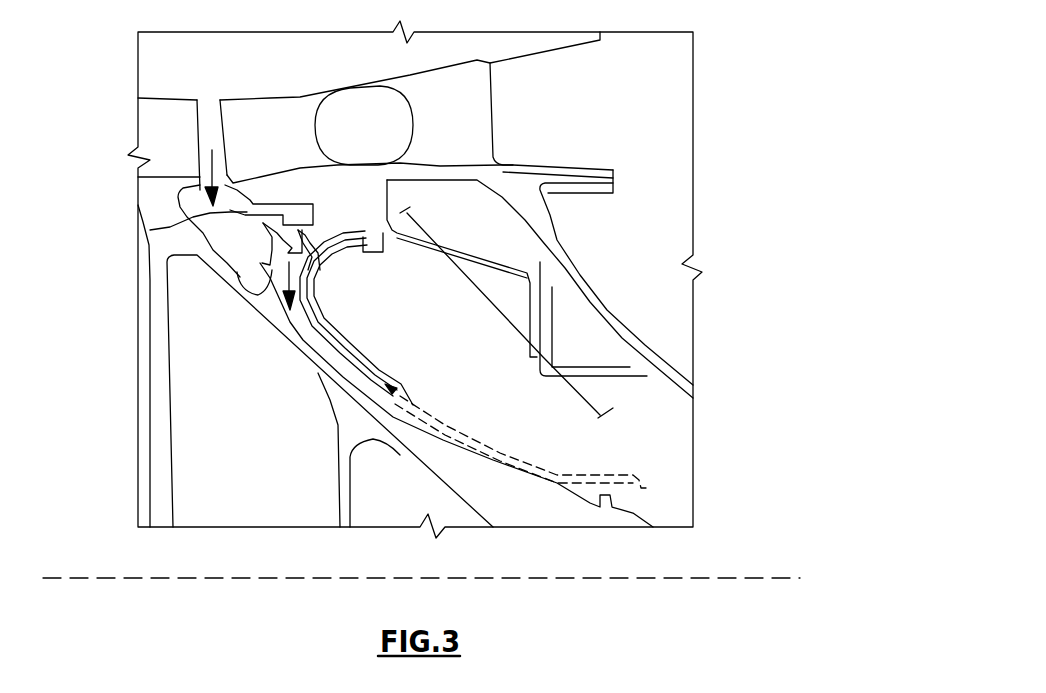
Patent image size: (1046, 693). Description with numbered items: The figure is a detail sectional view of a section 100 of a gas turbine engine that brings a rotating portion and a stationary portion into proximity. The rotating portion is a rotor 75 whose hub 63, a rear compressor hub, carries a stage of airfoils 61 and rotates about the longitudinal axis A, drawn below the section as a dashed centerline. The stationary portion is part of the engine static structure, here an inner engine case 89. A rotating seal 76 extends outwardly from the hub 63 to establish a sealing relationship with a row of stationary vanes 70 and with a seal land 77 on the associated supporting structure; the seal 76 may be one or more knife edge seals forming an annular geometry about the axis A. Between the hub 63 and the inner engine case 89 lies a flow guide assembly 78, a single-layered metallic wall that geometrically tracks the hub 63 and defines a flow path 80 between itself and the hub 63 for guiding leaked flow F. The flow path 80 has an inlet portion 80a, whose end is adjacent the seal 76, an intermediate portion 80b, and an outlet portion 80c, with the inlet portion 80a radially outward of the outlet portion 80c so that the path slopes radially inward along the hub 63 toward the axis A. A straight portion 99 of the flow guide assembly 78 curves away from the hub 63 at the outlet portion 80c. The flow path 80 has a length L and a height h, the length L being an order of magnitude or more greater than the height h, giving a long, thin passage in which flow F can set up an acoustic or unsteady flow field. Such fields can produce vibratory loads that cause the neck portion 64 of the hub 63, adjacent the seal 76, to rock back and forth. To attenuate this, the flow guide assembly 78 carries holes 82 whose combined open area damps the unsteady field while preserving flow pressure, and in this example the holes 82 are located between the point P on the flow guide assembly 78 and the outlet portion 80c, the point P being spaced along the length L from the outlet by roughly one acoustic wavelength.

The section 100 is at (118, 48).
The airfoils 61 is at (150, 127).
The stationary vanes 70 is at (290, 143).
The rotor 75 is at (138, 190).
The seal land 77 is at (150, 230).
The rotating seal 76 is at (167, 257).
The neck portion 64 is at (235, 287).
The flow path 80 is at (303, 327).
The hub 63 is at (322, 383).
The flow guide assembly 78 is at (338, 280).
The inlet portion 80a is at (347, 264).
The intermediate portion 80b is at (378, 365).
The outlet portion 80c is at (603, 456).
The holes 82 is at (600, 473).
The straight portion 99 is at (562, 473).
The inner engine case 89 is at (560, 238).
The flow F is at (205, 160).
The length L is at (427, 227).
The point P is at (393, 397).
The height h is at (470, 445).
The longitudinal axis A is at (662, 578).